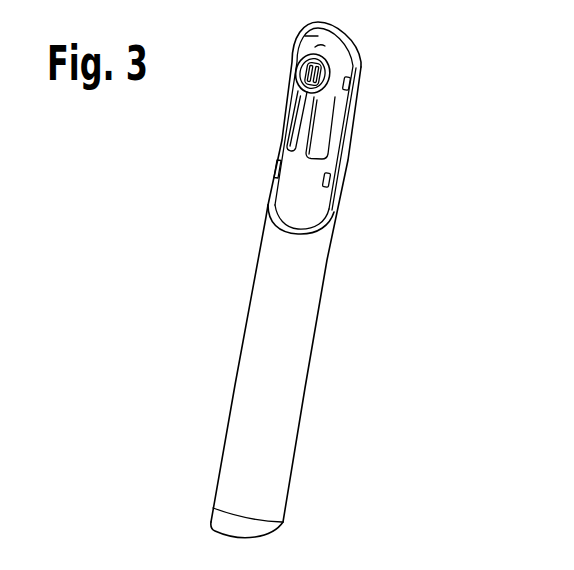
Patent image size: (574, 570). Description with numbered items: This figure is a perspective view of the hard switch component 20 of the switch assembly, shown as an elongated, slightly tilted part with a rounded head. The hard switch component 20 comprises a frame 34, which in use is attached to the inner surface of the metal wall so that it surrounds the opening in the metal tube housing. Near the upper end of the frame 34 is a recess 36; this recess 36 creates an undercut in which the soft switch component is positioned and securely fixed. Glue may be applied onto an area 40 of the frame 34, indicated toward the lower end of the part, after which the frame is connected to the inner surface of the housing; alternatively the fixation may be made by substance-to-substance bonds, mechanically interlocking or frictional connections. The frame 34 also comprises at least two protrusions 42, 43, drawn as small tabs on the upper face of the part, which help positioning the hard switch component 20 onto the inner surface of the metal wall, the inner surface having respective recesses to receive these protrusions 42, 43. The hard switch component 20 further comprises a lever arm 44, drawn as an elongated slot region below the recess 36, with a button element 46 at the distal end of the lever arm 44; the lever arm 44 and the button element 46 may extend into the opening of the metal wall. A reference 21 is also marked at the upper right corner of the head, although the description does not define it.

The hard switch component 20 is at (318, 397).
The housing head portion 21 is at (358, 58).
The frame 34 is at (267, 356).
The recess 36 is at (299, 60).
The area 40 is at (263, 463).
The protrusion 42 is at (349, 83).
The protrusion 43 is at (330, 185).
The lever arm 44 is at (308, 117).
The button element 46 is at (334, 62).